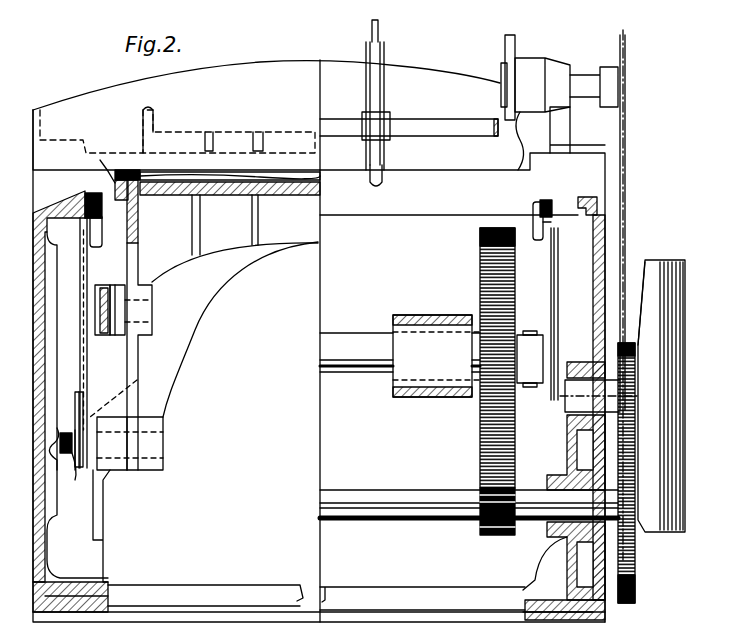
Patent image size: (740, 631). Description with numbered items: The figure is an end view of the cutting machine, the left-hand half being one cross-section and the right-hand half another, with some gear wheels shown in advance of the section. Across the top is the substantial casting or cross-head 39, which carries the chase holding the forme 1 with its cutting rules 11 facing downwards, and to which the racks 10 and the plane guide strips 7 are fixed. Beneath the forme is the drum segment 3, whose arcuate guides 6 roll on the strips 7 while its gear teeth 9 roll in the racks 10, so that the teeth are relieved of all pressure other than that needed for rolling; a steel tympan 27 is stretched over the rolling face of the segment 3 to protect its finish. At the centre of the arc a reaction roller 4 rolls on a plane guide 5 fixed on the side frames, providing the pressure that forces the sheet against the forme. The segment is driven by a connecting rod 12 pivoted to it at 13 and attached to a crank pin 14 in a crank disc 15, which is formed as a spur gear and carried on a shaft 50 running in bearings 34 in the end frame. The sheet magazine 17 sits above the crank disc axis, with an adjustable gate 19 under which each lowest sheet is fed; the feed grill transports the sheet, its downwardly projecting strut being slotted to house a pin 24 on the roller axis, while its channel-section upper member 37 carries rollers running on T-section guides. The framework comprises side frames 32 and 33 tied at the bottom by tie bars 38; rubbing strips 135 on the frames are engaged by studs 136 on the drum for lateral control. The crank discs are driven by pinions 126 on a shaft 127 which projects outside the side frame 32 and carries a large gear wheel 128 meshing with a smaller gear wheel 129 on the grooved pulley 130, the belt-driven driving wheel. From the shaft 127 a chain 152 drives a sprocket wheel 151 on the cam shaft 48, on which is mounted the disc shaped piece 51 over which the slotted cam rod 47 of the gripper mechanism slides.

The forme 1 is at (235, 172).
The drum segment 3 is at (270, 232).
The roller 4 is at (113, 420).
The plane guide 5 is at (112, 478).
The arcuate guide 6 is at (138, 195).
The plane guide strip 7 is at (135, 172).
The gear teeth 9 is at (100, 160).
The rack 10 is at (120, 170).
The cutting rules 11 is at (211, 195).
The connecting rod 12 is at (103, 283).
The pivot 13 is at (152, 302).
The crank pin 14 is at (515, 382).
The crank disc 15 is at (515, 300).
The magazine 17 is at (412, 104).
The adjustable gate 19 is at (383, 170).
The pin 24 is at (137, 380).
The tympan 27 is at (305, 195).
The side frame 32 is at (598, 281).
The side frame 33 is at (36, 353).
The bearing 34 is at (420, 392).
The upper member 37 is at (540, 200).
The tie bar 38 is at (148, 590).
The cross-head 39 is at (271, 68).
The cam rod 47 is at (501, 70).
The cam shaft 48 is at (590, 80).
The shaft 50 is at (350, 335).
The disc shaped piece 51 is at (514, 53).
The pinion 126 is at (493, 535).
The shaft 127 is at (422, 495).
The large gear wheel 128 is at (636, 567).
The smaller gear wheel 129 is at (605, 340).
The grooved pulley 130 is at (670, 262).
The rubbing strip 135 is at (75, 423).
The stud 136 is at (70, 458).
The sprocket wheel 151 is at (620, 42).
The chain 152 is at (632, 202).